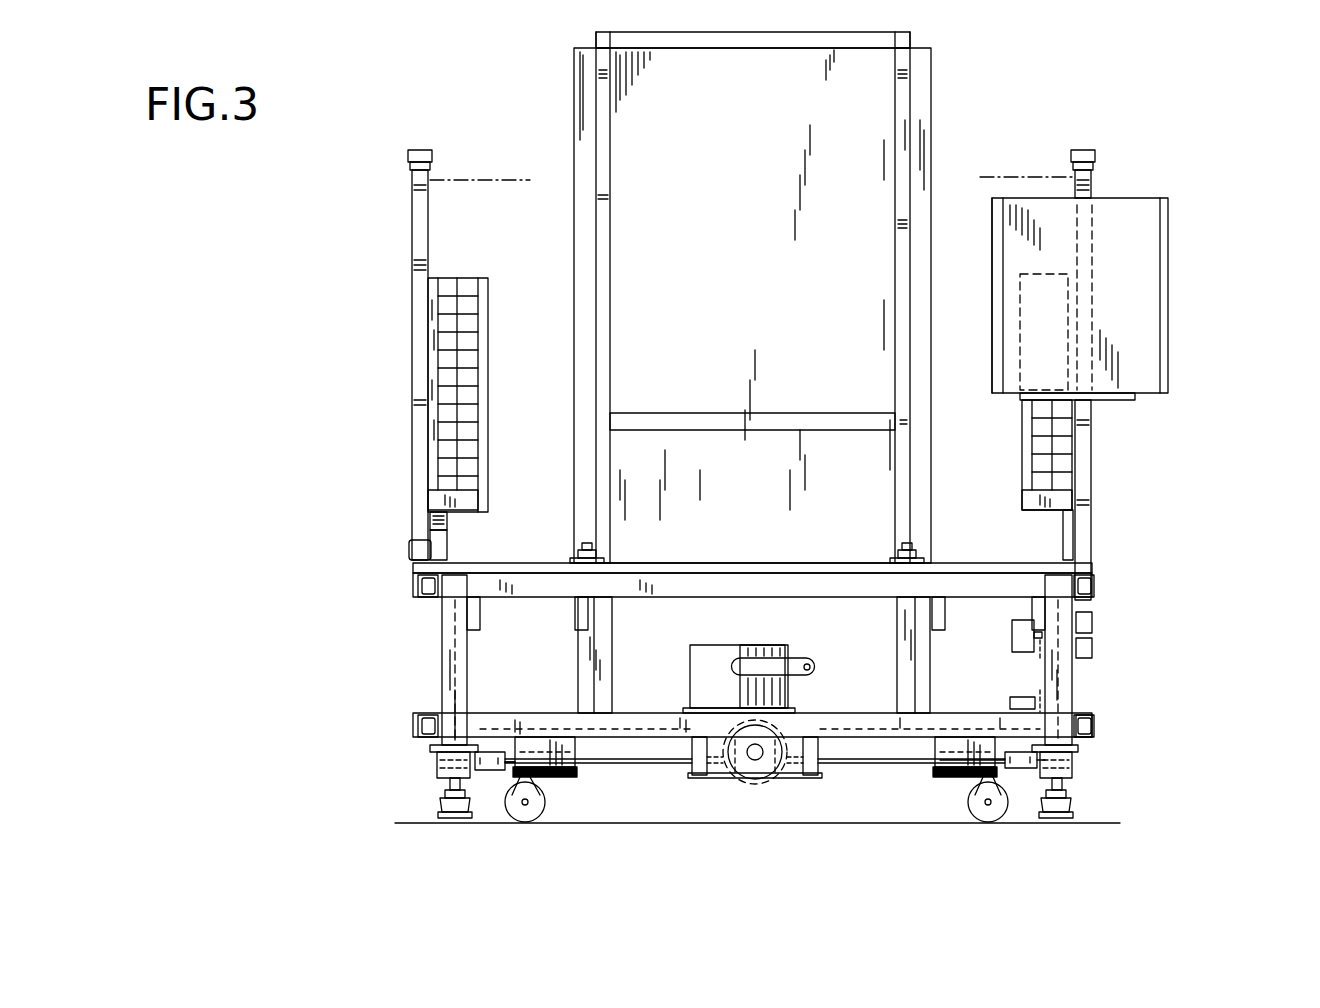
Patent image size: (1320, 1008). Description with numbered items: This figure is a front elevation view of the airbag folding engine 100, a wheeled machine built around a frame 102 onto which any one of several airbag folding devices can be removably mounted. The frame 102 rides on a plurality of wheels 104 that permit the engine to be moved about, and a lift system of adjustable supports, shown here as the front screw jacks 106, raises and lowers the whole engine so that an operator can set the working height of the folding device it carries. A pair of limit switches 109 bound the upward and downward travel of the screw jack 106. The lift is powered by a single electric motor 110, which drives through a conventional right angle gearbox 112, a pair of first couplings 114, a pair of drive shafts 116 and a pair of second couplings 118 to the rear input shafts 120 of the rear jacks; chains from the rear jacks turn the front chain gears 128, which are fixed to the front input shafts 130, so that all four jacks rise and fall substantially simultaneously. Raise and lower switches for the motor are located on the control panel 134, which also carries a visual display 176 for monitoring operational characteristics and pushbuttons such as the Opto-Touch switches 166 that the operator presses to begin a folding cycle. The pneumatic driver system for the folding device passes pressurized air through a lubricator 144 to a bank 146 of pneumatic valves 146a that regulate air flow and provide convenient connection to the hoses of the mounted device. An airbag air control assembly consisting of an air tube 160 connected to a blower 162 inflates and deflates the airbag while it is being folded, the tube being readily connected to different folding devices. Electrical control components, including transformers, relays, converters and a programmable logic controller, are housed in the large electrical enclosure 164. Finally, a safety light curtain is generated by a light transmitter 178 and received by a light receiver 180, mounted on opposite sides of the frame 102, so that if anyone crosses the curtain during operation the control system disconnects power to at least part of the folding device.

The airbag folding engine 100 is at (512, 80).
The frame 102 is at (695, 575).
The wheels 104 is at (535, 815).
The front screw jacks 106 is at (445, 812).
The limit switches 109 is at (1008, 632).
The electric motor 110 is at (770, 778).
The right angle gearbox 112 is at (748, 775).
The first couplings 114 is at (715, 780).
The drive shafts 116 is at (655, 768).
The second couplings 118 is at (497, 750).
The rear input shafts 120 is at (490, 772).
The front chain gears 128 is at (428, 746).
The front input shafts 130 is at (440, 778).
The control panel 134 is at (1185, 297).
The lubricator 144 is at (425, 595).
The bank of pneumatic valves 146 is at (492, 320).
The pneumatic valves 146a is at (470, 430).
The air tube 160 is at (770, 660).
The blower 162 is at (700, 690).
The electrical enclosure 164 is at (757, 126).
The Opto-Touch switches 166 is at (583, 558).
The visual display 176 is at (993, 245).
The light transmitter 178 is at (1092, 190).
The light receiver 180 is at (412, 200).